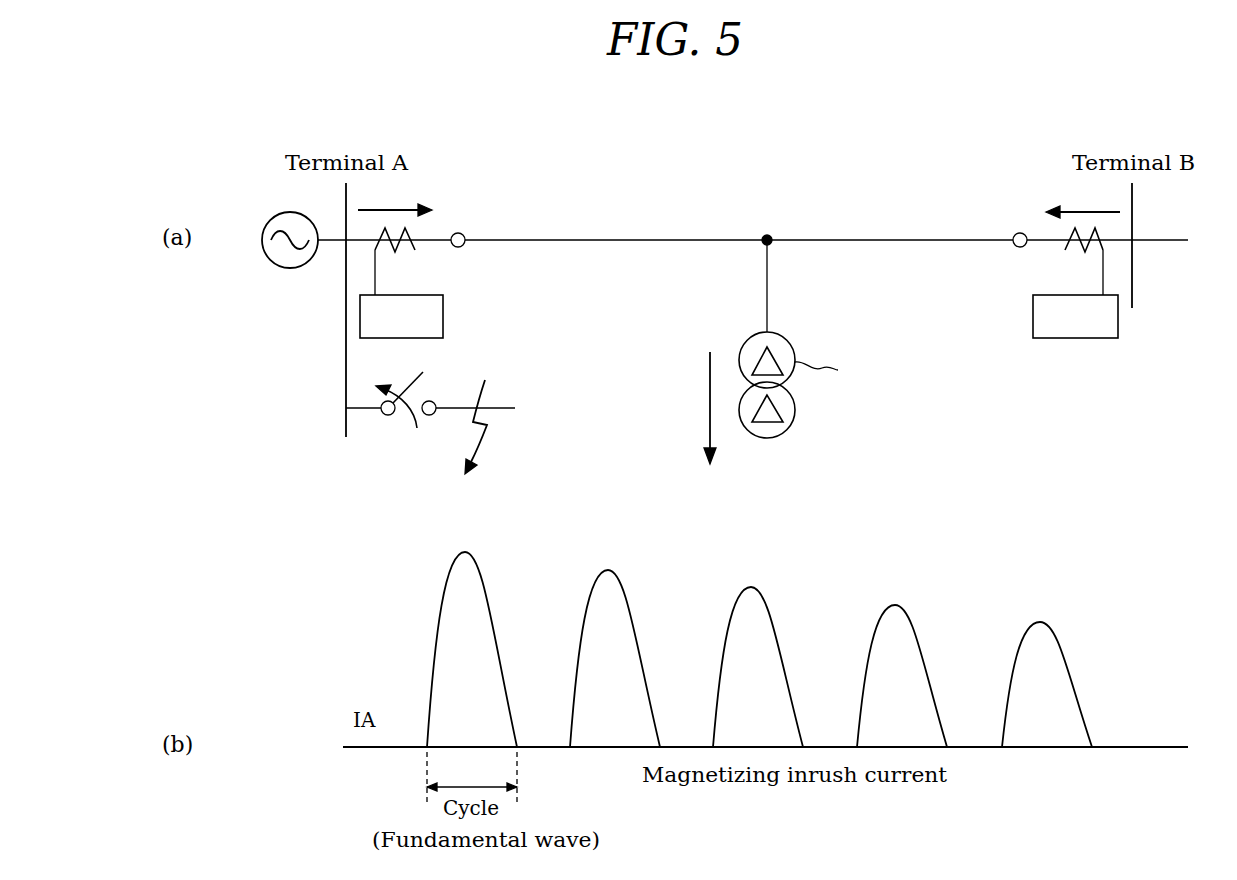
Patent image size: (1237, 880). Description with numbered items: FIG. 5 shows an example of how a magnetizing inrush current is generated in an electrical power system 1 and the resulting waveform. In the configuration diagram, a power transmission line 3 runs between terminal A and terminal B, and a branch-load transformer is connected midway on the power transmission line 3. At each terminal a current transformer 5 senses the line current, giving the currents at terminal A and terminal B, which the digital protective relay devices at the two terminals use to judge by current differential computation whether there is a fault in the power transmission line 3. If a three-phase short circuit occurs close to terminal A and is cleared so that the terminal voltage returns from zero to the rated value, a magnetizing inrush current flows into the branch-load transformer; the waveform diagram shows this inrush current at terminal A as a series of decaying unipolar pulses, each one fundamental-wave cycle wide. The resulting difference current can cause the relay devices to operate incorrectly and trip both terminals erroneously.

The electrical power system 1 is at (546, 201).
The power transmission line 3 is at (598, 240).
The current transformer 5 is at (418, 250).